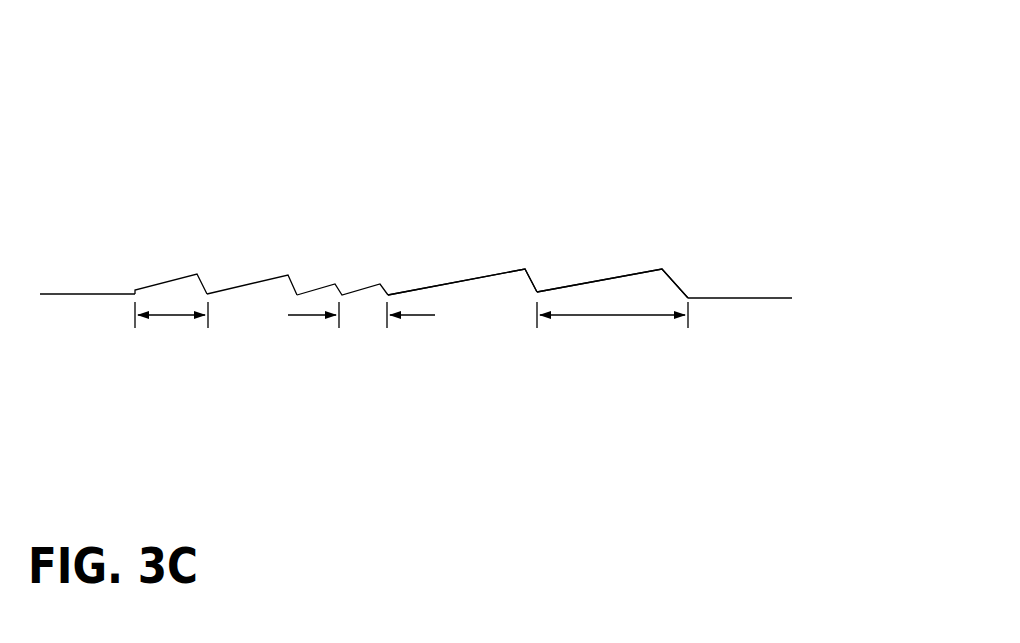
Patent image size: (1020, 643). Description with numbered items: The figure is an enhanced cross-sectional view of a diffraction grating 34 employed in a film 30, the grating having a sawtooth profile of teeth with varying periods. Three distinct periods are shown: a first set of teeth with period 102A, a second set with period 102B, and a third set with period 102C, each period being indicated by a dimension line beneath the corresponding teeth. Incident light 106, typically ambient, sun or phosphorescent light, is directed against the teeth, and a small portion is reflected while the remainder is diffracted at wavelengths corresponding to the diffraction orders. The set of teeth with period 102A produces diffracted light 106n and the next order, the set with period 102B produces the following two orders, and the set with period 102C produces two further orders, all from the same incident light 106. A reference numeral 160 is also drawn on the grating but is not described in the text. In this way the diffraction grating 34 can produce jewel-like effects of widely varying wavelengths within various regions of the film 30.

The film 30 is at (727, 172).
The diffraction grating 34 is at (675, 125).
The incident light 106 is at (146, 281).
The diffracted light 106n is at (153, 277).
The valley between protrusions 160 is at (362, 285).
The period 102A is at (168, 317).
The period 102B is at (310, 317).
The period 102C is at (595, 317).